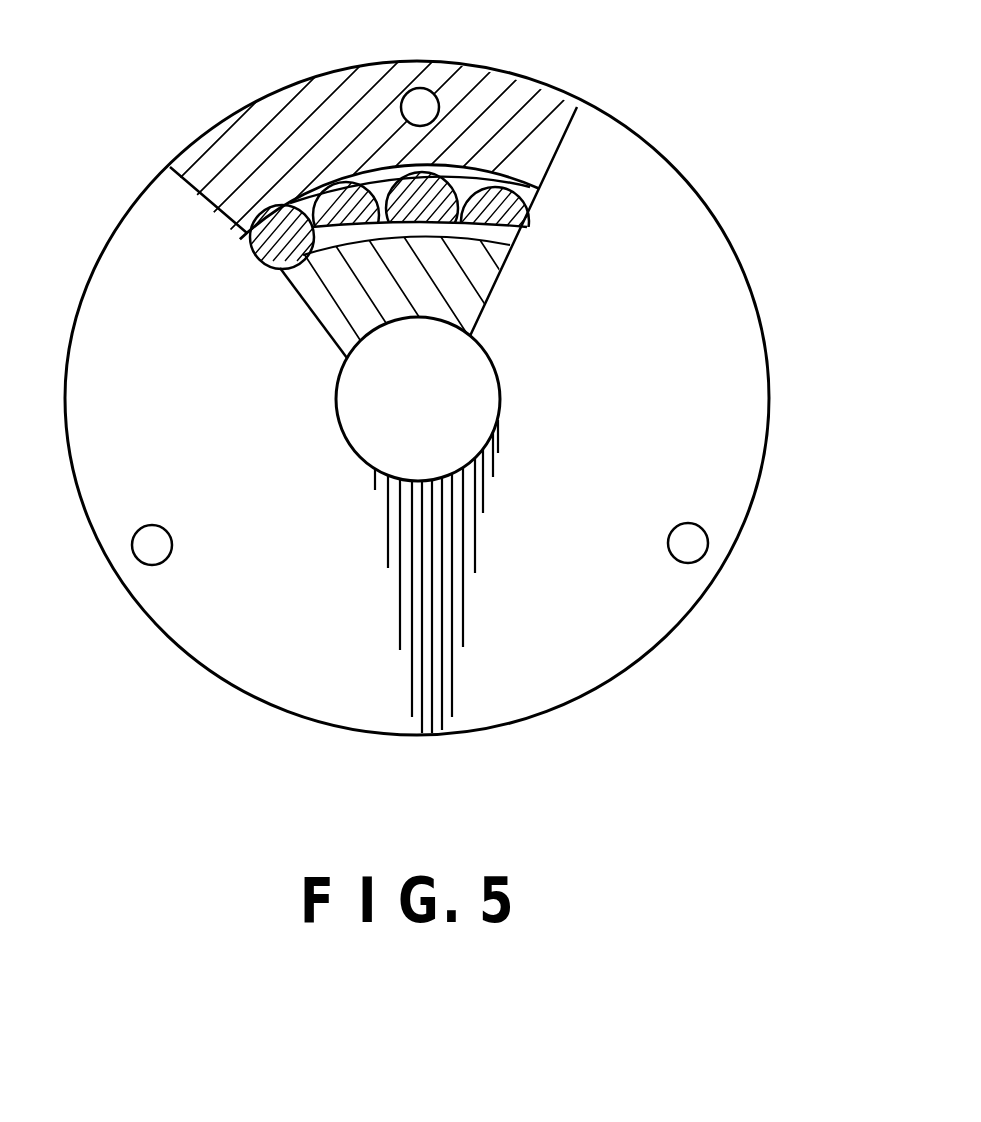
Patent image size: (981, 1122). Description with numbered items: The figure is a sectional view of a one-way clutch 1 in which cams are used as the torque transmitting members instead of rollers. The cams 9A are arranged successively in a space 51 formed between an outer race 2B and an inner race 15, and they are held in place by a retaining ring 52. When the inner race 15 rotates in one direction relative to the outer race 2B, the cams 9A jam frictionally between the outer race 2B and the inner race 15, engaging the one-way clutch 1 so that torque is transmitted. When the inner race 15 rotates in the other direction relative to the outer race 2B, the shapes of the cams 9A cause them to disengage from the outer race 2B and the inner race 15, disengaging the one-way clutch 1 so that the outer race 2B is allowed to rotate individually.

The one-way clutch 1 is at (655, 119).
The outer race 2B is at (238, 112).
The cams 9A is at (440, 173).
The space 51 is at (353, 177).
The retaining ring 52 is at (530, 213).
The inner race 15 is at (473, 322).